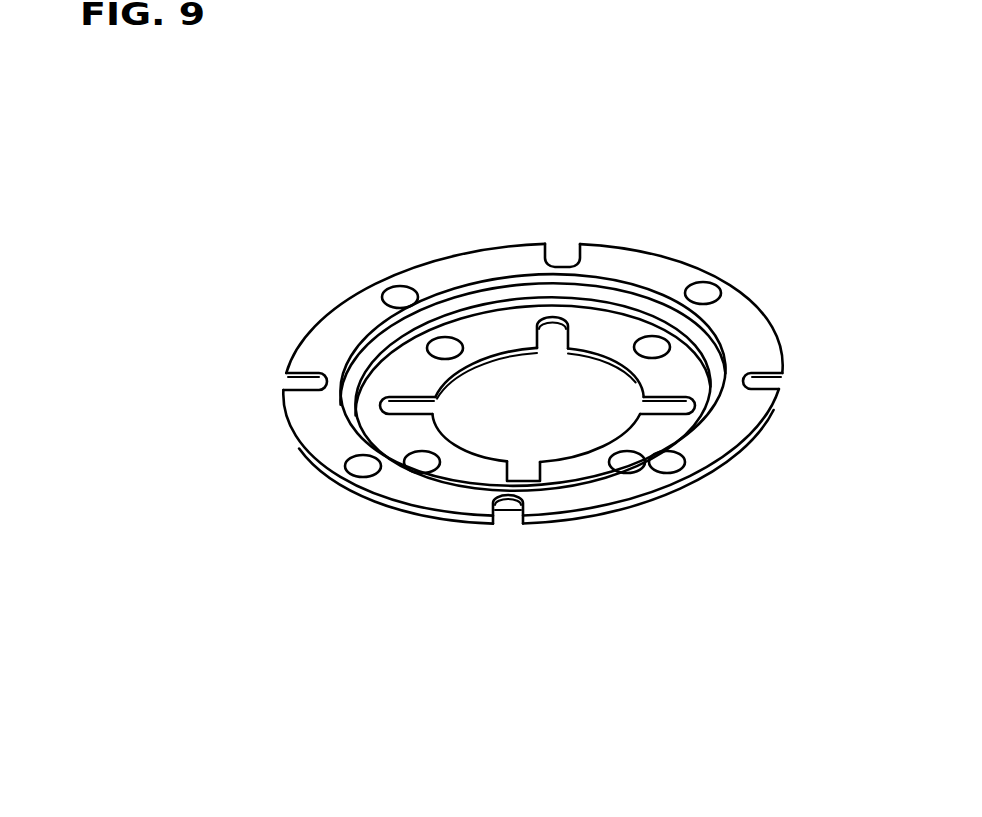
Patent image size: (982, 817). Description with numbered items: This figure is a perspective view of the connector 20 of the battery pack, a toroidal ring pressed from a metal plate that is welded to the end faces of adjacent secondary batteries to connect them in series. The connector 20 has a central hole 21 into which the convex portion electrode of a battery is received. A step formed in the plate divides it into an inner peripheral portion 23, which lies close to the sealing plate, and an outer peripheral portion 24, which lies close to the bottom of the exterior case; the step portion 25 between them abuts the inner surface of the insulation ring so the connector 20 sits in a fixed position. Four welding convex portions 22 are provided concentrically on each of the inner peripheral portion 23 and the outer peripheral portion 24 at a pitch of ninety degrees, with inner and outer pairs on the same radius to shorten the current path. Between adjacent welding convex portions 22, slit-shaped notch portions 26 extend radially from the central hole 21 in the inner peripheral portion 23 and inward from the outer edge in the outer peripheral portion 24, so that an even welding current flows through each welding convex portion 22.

The connector 20 is at (385, 235).
The central hole 21 is at (481, 446).
The welding convex portions 22 is at (657, 343).
The inner peripheral portion 23 is at (490, 322).
The outer peripheral portion 24 is at (755, 318).
The step portion 25 is at (603, 297).
The notch portions 26 is at (292, 380).